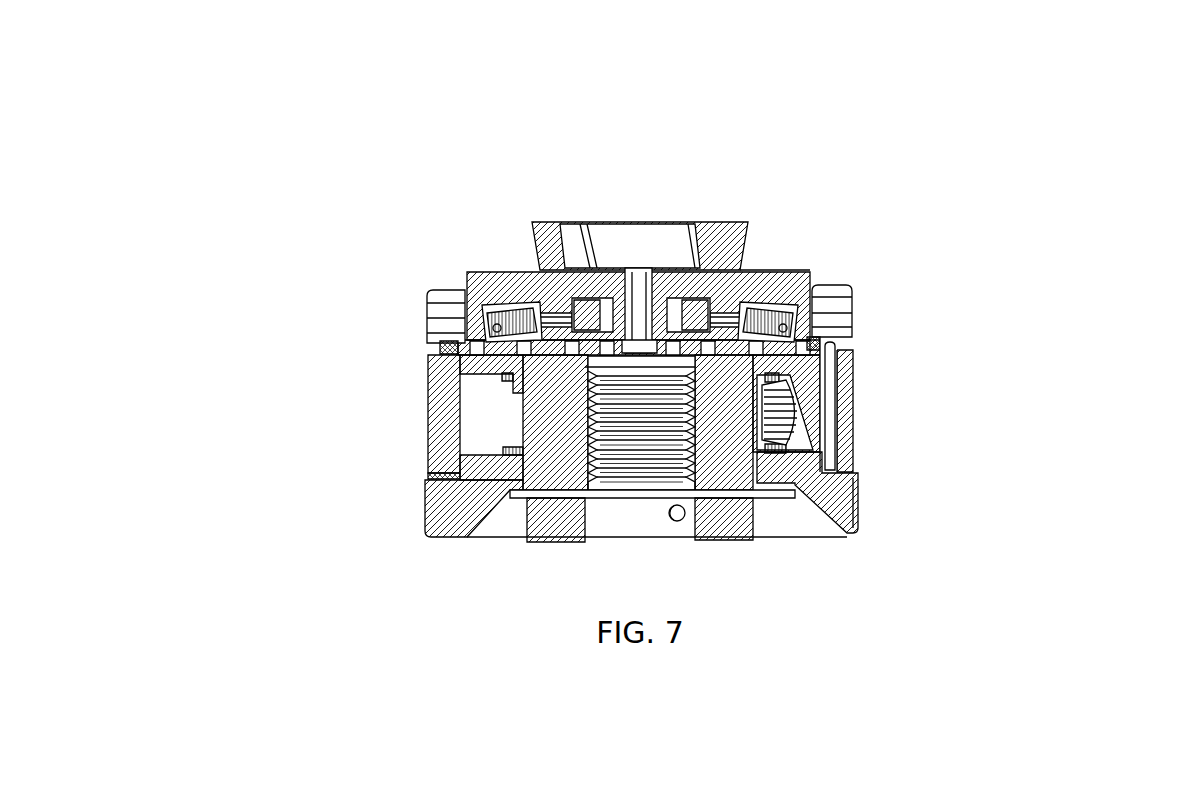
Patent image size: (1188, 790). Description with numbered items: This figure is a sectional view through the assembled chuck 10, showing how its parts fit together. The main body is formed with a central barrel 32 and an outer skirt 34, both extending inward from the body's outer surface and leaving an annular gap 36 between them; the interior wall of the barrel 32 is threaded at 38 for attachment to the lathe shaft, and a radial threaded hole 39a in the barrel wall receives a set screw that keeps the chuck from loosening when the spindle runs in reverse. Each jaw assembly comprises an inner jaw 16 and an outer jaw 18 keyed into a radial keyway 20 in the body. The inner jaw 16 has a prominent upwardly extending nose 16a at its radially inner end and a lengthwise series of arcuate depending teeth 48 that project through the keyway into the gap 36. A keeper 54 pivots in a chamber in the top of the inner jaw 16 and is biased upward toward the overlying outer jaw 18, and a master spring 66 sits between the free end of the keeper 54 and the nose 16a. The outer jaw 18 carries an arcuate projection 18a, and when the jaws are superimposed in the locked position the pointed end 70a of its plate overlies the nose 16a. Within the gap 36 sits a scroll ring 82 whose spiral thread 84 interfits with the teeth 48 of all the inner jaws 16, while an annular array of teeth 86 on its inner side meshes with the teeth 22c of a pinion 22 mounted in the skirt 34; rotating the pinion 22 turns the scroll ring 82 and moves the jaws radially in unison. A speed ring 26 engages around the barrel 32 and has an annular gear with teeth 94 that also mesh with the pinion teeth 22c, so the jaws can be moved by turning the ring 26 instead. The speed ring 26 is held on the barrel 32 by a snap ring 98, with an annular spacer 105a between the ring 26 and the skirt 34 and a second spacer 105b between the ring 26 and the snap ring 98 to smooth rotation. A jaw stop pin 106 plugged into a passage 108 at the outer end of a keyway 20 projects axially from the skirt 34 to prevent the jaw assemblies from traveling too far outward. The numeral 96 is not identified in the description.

The chuck 10 is at (318, 188).
The inner jaw 16 is at (825, 323).
The nose 16a is at (600, 283).
The outer jaw 18 is at (812, 283).
The arcuate projection 18a is at (748, 222).
The radial keyway 20 is at (437, 333).
The pinion 22 is at (812, 393).
The pinion teeth 22c is at (802, 416).
The speed ring 26 is at (866, 516).
The central barrel 32 is at (757, 523).
The outer skirt 34 is at (855, 423).
The annular gap 36 is at (807, 426).
The thread 38 is at (685, 457).
The radial threaded hole 39a is at (693, 527).
The teeth 48 is at (495, 322).
The keeper 54 is at (805, 300).
The master spring 66 is at (794, 262).
The pointed end 70a is at (617, 285).
The scroll ring 82 is at (465, 380).
The spiral thread 84 is at (428, 360).
The teeth 86 is at (502, 382).
The teeth 94 is at (498, 447).
The lower flange 96 is at (422, 510).
The snap ring 98 is at (513, 500).
The annular spacer 105a is at (850, 472).
The spacer 105b is at (505, 488).
The jaw stop pin 106 is at (855, 345).
The passage 108 is at (830, 467).